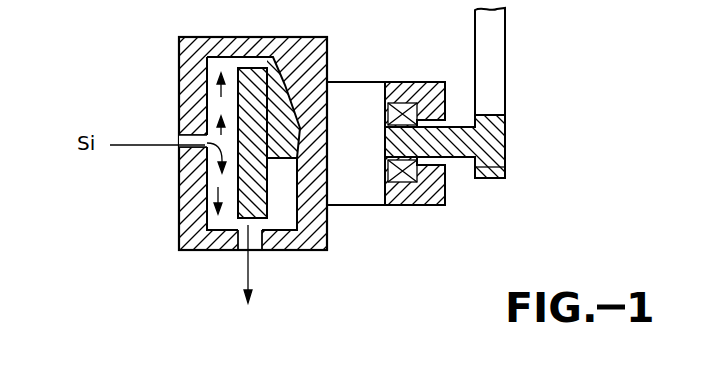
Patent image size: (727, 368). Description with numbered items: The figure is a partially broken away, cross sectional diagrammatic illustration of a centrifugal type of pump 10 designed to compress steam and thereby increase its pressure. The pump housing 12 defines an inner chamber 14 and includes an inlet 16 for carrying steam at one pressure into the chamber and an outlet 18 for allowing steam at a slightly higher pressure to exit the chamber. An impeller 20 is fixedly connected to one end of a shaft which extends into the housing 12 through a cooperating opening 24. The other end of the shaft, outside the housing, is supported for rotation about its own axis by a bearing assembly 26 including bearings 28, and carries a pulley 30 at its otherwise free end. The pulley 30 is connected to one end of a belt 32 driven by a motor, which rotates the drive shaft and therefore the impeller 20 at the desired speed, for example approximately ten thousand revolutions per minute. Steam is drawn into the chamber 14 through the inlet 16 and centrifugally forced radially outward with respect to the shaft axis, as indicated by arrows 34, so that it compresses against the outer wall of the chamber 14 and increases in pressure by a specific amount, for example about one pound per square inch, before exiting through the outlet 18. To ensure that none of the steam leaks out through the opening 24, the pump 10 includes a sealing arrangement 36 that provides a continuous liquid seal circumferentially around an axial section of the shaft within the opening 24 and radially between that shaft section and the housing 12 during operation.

The pump 10 is at (381, 293).
The pump housing 12 is at (188, 232).
The inner chamber 14 is at (275, 249).
The inlet 16 is at (190, 147).
The outlet 18 is at (243, 254).
The impeller 20 is at (236, 70).
The opening 24 is at (296, 160).
The bearing assembly 26 is at (418, 81).
The bearings 28 is at (402, 182).
The pulley 30 is at (502, 135).
The belt 32 is at (498, 64).
The arrows 34 is at (190, 87).
The sealing arrangement 36 is at (362, 83).